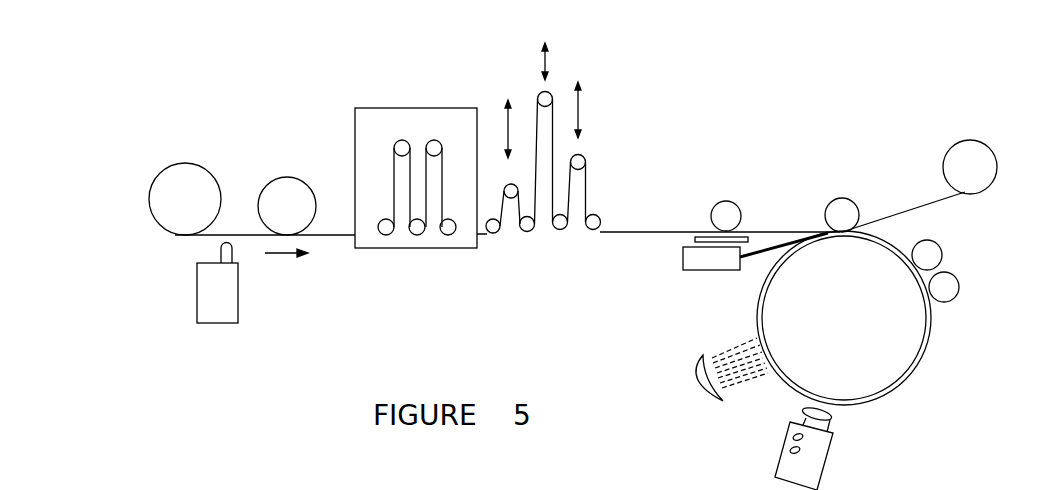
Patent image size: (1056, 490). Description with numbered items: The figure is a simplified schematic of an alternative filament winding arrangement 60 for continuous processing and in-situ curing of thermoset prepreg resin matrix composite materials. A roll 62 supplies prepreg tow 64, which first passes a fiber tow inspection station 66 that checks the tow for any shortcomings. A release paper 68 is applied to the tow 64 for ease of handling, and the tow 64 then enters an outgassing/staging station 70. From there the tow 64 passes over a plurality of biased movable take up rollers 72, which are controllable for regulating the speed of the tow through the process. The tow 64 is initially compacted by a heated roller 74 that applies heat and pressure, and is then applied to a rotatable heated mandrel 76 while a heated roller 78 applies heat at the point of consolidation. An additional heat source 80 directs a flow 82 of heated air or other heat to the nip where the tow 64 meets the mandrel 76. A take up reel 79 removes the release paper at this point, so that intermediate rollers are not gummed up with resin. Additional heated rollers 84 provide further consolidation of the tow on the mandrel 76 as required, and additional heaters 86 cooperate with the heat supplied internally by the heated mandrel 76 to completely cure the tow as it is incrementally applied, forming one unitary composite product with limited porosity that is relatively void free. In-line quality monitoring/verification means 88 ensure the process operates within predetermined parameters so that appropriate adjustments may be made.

The arrangement 60 is at (413, 282).
The roll 62 is at (197, 208).
The prepreg tow 64 is at (256, 235).
The fiber tow inspection station 66 is at (229, 307).
The release paper 68 is at (299, 215).
The outgassing/staging station 70 is at (402, 108).
The biased movable take up rollers 72 is at (548, 92).
The heated roller 74 is at (725, 201).
The heated mandrel 76 is at (856, 330).
The heated roller 78 is at (840, 199).
The take up reel 79 is at (978, 142).
The heat source 80 is at (708, 272).
The flow 82 is at (755, 268).
The additional heated rollers 84 is at (933, 242).
The additional heaters 86 is at (710, 402).
The in-line quality monitoring/verification means 88 is at (827, 467).